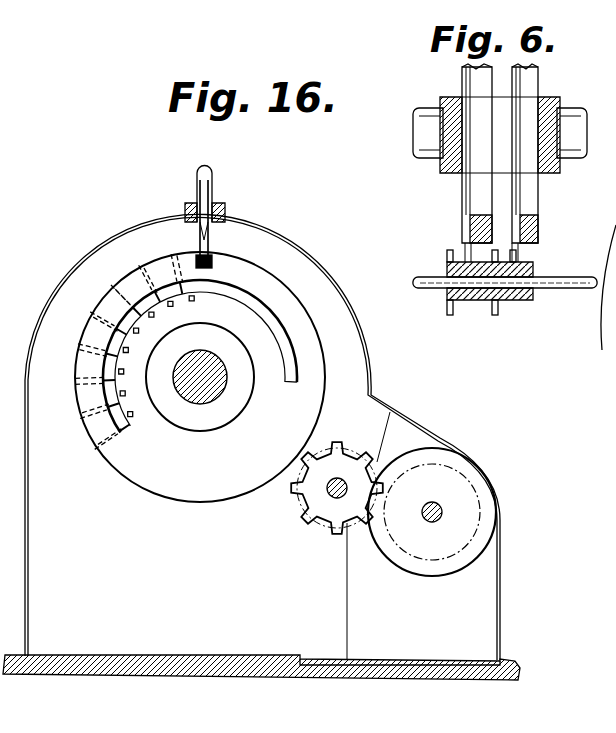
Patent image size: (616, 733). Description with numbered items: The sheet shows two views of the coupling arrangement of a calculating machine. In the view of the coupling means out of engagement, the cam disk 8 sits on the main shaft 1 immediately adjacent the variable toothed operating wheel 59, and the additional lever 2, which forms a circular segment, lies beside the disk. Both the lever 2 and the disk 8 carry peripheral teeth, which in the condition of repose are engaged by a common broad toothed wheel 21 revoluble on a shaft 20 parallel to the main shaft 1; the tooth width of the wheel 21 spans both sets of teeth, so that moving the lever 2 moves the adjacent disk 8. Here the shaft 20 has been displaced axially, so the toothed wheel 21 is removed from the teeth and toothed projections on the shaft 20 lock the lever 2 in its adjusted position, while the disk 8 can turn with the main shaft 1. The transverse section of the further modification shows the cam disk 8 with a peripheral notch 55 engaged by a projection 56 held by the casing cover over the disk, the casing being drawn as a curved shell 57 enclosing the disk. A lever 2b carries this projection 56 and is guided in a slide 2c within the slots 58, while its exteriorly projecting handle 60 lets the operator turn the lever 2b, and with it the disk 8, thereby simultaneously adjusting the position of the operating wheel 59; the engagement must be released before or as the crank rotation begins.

In FIG. 16, the main shaft 1 is at (212, 393).
In FIG. 6, the main shaft 1 is at (590, 156).
In FIG. 6, the additional lever 2 is at (521, 210).
In FIG. 16, the lever 2b is at (205, 213).
In FIG. 16, the slide 2c is at (225, 206).
In FIG. 16, the cam disk 8 is at (265, 279).
In FIG. 6, the cam disk 8 is at (522, 188).
In FIG. 6, the shaft 20 is at (572, 283).
In FIG. 6, the toothed wheel 21 is at (450, 313).
In FIG. 16, the peripheral notch 55 is at (206, 258).
In FIG. 16, the projection 56 is at (197, 256).
In FIG. 16, the housing shell 57 is at (298, 241).
In FIG. 16, the slots 58 is at (128, 223).
In FIG. 6, the variable toothed operating wheel 59 is at (530, 84).
In FIG. 16, the handle 60 is at (209, 177).